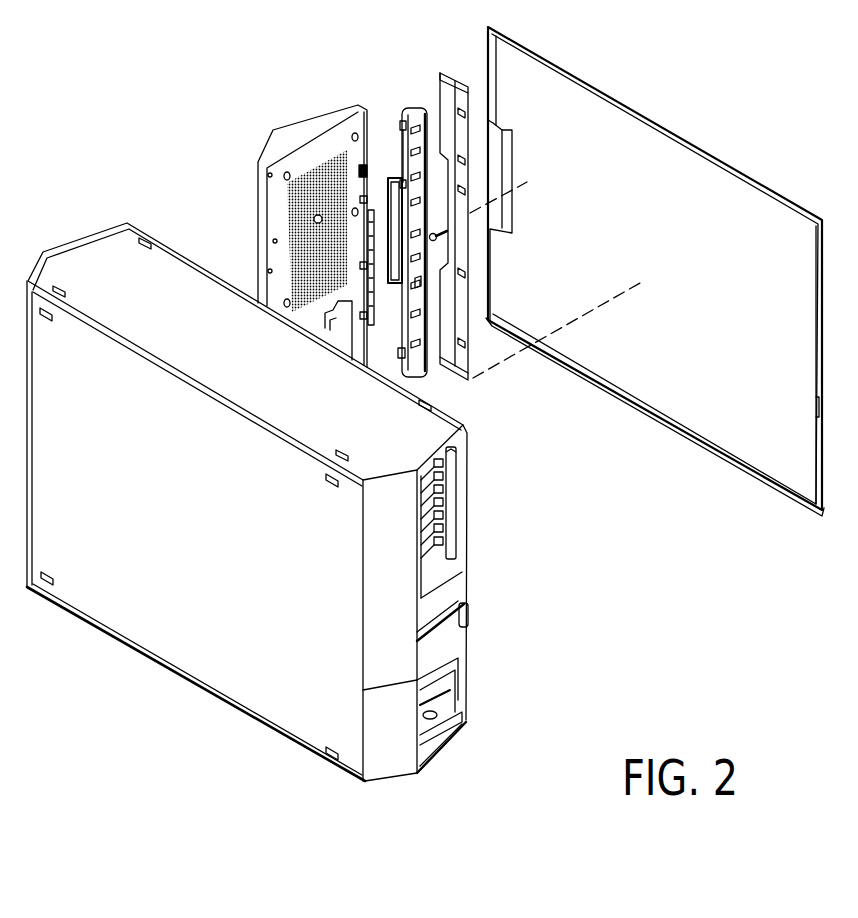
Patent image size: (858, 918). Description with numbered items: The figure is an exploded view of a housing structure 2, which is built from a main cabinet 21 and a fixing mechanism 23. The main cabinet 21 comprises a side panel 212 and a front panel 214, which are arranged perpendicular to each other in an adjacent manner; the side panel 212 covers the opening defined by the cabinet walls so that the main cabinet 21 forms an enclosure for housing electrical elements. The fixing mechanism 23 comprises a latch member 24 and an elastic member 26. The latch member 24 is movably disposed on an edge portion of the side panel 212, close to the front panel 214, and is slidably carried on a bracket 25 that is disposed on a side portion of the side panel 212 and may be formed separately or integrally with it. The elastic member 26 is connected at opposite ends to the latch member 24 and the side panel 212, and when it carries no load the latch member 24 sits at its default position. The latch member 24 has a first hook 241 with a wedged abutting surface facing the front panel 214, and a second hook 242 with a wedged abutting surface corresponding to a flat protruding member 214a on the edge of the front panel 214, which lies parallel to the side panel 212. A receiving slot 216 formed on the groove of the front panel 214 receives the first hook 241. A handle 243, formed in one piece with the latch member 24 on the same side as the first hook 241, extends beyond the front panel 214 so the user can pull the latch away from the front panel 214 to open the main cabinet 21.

The housing structure 2 is at (36, 80).
The main cabinet 21 is at (97, 268).
The side panel 212 is at (683, 178).
The front panel 214 is at (292, 167).
The protruding member 214a is at (368, 283).
The receiving slot 216 is at (362, 165).
The fixing mechanism 23 is at (605, 170).
The latch member 24 is at (423, 283).
The first hook 241 is at (403, 122).
The second hook 242 is at (398, 228).
The handle 243 is at (388, 243).
The bracket 25 is at (462, 165).
The elastic member 26 is at (447, 236).